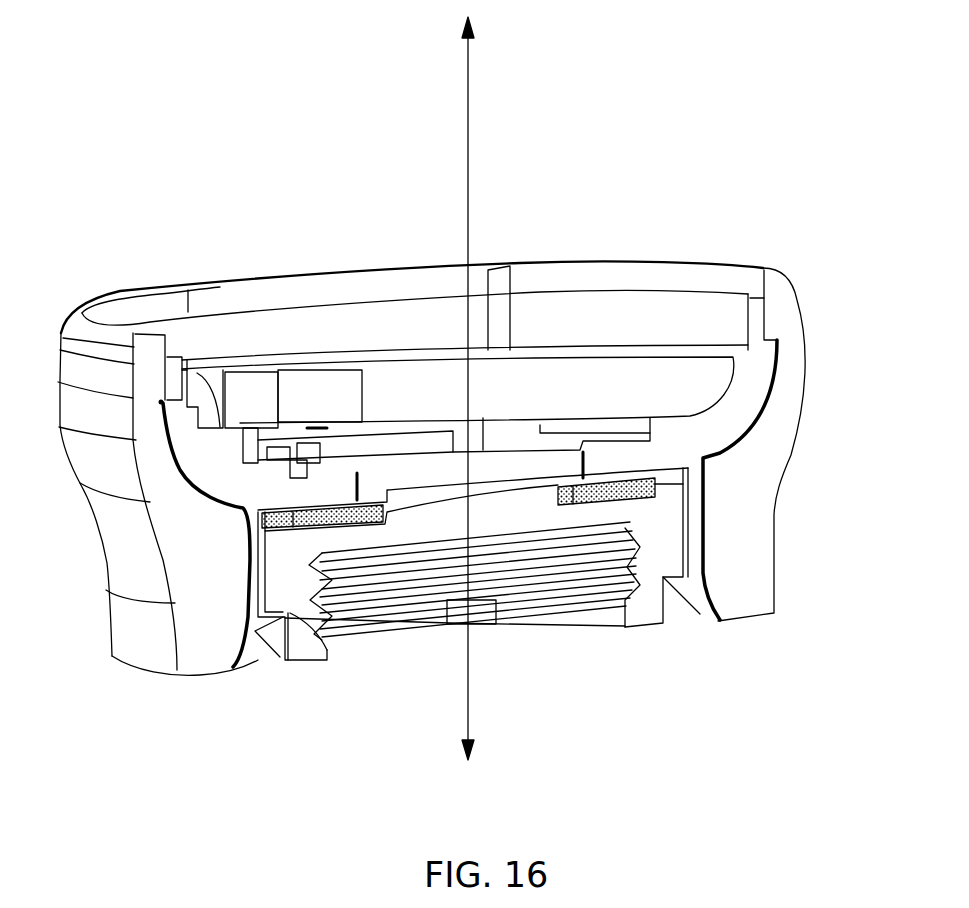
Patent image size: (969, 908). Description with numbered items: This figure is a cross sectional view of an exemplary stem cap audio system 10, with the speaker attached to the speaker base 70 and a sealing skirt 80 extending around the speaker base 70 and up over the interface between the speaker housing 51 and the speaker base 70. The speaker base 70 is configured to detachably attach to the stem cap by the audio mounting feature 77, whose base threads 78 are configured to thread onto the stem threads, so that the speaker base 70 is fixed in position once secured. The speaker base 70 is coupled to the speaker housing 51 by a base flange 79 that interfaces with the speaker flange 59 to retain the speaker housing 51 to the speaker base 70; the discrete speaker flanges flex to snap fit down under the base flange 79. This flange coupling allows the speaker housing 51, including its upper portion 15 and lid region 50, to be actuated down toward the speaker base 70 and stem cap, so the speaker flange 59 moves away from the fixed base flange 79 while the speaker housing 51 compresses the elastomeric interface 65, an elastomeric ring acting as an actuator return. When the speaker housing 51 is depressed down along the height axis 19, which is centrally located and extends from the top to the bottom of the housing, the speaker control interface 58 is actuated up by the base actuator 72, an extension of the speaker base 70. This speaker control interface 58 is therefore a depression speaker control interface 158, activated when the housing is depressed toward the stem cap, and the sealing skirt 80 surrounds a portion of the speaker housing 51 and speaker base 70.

The cap assembly 10 is at (223, 156).
The top surface of lid 15 is at (303, 318).
The height axis 19 is at (468, 87).
The lid 50 is at (683, 325).
The speaker housing 51 is at (187, 440).
The speaker control interface 58 is at (462, 435).
The depression speaker control interface 158 is at (475, 427).
The speaker flange 59 is at (282, 657).
The elastomeric interface 65 is at (323, 527).
The speaker base 70 is at (322, 640).
The base actuator 72 is at (463, 532).
The audio mounting feature 77 is at (613, 573).
The base threads 78 is at (567, 567).
The base flange 79 is at (278, 617).
The sealing skirt 80 is at (733, 497).